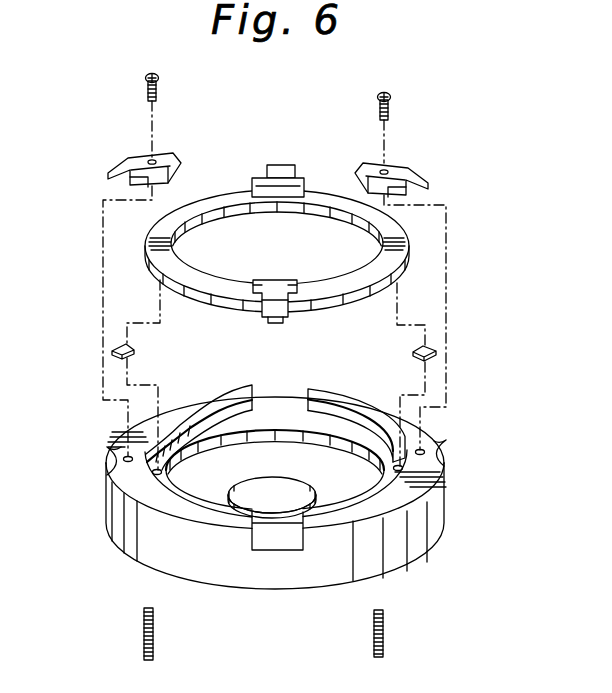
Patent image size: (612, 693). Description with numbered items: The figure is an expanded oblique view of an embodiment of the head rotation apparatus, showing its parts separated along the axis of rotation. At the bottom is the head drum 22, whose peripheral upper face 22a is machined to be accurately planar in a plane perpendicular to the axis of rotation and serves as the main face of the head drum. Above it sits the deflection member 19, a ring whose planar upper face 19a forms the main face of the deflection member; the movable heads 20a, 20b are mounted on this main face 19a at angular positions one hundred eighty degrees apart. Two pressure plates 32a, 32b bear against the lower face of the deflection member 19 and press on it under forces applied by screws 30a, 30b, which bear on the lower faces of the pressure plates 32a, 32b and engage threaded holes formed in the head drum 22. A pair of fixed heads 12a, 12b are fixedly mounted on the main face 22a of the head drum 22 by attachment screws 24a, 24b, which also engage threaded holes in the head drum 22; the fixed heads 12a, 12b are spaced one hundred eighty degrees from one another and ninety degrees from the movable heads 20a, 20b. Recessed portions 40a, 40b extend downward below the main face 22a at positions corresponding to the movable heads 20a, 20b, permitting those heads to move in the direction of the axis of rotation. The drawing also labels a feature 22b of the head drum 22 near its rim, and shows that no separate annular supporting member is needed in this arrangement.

The fixed head 12a is at (128, 158).
The fixed head 12b is at (416, 175).
The deflection member 19 is at (315, 222).
The main face of the deflection member 19a is at (178, 252).
The movable head 20a is at (285, 282).
The movable head 20b is at (285, 165).
The head drum 22 is at (306, 491).
The main face of the head drum 22a is at (445, 460).
The arcuate wall segment 22b is at (338, 426).
The attachment screw 24a is at (161, 87).
The attachment screw 24b is at (392, 100).
The screw 30a is at (143, 630).
The screw 30b is at (385, 641).
The pressure plate 32a is at (112, 349).
The pressure plate 32b is at (438, 359).
The recessed portion 40a is at (283, 552).
The recessed portion 40b is at (271, 402).